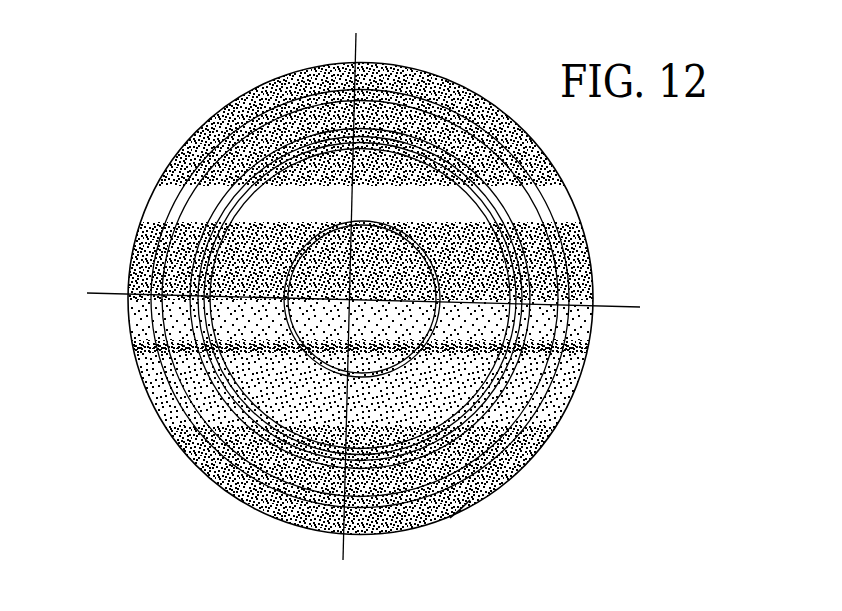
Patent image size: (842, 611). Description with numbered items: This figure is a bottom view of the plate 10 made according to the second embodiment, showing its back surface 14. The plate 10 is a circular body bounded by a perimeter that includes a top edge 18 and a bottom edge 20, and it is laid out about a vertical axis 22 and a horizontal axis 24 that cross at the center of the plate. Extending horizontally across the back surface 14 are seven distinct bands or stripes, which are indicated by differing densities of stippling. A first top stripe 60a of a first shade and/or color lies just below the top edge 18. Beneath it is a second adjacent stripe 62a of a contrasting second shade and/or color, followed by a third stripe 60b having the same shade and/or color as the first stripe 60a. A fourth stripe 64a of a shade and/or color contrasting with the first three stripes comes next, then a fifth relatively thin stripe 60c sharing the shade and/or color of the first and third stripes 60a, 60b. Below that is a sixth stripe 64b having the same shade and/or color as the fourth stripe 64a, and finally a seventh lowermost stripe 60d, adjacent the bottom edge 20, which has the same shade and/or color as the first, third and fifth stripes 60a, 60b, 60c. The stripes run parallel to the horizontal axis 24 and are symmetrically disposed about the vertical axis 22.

The plate 10 is at (626, 248).
The back surface 14 is at (391, 271).
The top edge 18 is at (455, 82).
The bottom edge 20 is at (450, 518).
The vertical axis 22 is at (356, 46).
The horizontal axis 24 is at (108, 293).
The first top stripe 60a is at (525, 150).
The third stripe 60b is at (594, 265).
The fifth relatively thin stripe 60c is at (593, 345).
The seventh lowermost stripe 60d is at (535, 455).
The second adjacent stripe 62a is at (558, 208).
The fourth stripe 64a is at (580, 331).
The sixth stripe 64b is at (560, 392).